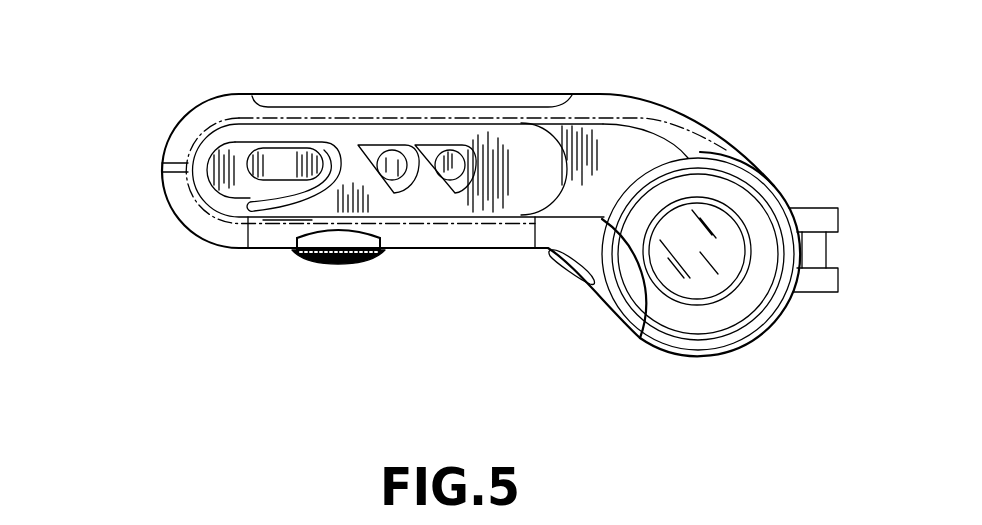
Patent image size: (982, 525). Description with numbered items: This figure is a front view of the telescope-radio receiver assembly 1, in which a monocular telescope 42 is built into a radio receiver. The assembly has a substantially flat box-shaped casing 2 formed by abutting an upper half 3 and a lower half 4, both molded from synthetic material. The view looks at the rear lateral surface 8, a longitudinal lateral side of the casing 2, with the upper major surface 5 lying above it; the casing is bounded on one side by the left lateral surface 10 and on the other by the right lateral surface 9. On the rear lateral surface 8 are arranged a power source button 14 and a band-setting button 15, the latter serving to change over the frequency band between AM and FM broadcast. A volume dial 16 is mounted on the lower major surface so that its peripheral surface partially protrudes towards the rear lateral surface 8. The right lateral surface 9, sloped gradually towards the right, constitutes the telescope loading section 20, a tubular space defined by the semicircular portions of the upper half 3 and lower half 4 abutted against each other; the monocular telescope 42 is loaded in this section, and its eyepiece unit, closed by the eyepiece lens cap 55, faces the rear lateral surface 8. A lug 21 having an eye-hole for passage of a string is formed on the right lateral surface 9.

The telescope-radio receiver assembly 1 is at (253, 73).
The casing 2 is at (55, 80).
The upper half 3 is at (186, 113).
The lower half 4 is at (184, 211).
The upper major surface 5 is at (583, 96).
The rear lateral surface 8 is at (514, 186).
The right lateral surface 9 is at (777, 186).
The left lateral surface 10 is at (160, 152).
The power source button 14 is at (286, 155).
The band-setting button 15 is at (390, 156).
The volume dial 16 is at (337, 265).
The telescope loading section 20 is at (655, 352).
The lug 21 is at (820, 220).
The monocular telescope 42 is at (714, 245).
The eyepiece lens cap 55 is at (737, 153).